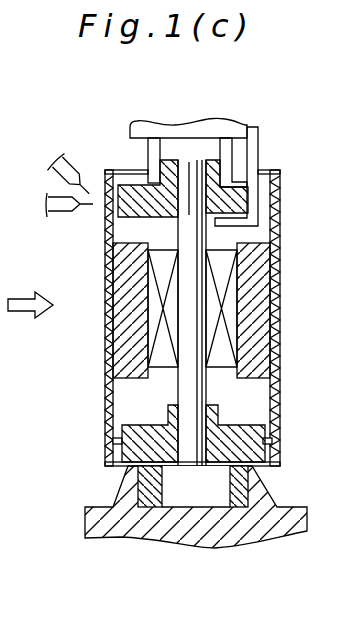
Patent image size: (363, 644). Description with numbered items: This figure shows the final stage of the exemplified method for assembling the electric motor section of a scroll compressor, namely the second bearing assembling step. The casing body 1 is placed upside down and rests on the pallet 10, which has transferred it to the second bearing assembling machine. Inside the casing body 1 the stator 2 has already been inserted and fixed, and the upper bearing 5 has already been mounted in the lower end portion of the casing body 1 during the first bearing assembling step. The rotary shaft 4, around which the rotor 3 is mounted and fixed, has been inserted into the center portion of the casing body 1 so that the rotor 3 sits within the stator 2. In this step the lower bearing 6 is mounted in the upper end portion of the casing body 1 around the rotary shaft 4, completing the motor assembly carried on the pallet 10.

The casing body 1 is at (107, 230).
The stator 2 is at (115, 340).
The rotor 3 is at (227, 308).
The rotary shaft 4 is at (206, 236).
The upper bearing 5 is at (243, 430).
The lower bearing 6 is at (132, 192).
The pallet 10 is at (85, 515).